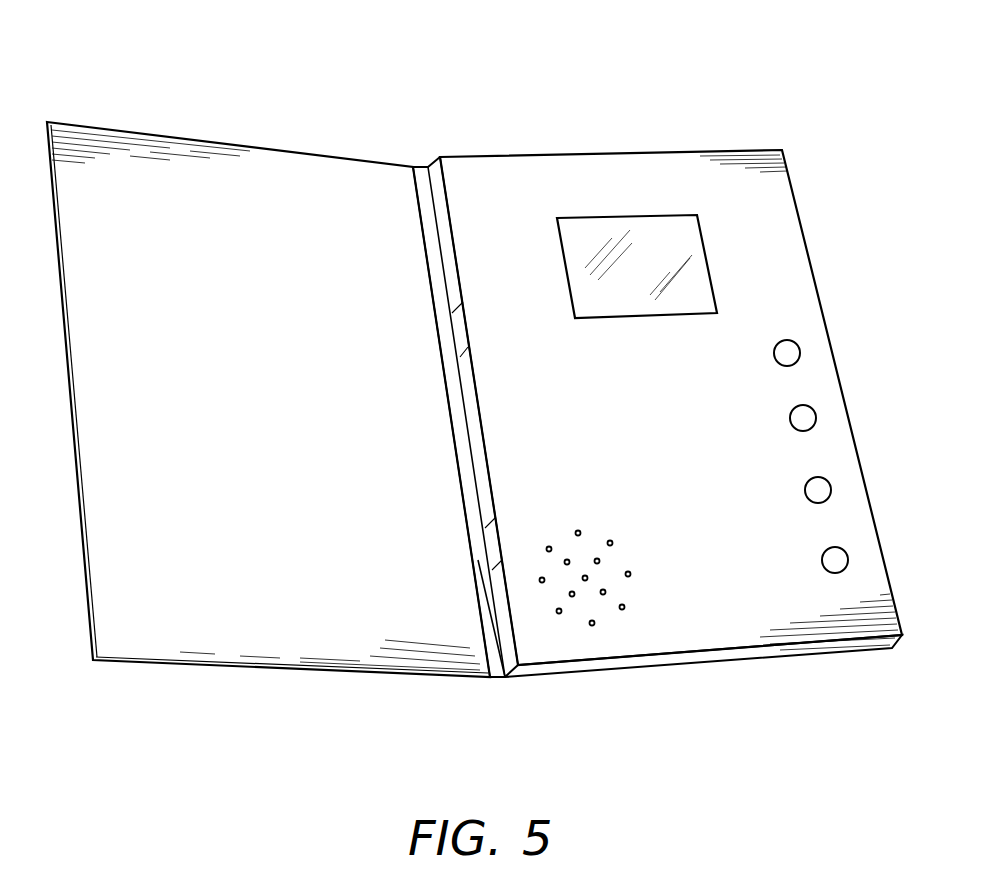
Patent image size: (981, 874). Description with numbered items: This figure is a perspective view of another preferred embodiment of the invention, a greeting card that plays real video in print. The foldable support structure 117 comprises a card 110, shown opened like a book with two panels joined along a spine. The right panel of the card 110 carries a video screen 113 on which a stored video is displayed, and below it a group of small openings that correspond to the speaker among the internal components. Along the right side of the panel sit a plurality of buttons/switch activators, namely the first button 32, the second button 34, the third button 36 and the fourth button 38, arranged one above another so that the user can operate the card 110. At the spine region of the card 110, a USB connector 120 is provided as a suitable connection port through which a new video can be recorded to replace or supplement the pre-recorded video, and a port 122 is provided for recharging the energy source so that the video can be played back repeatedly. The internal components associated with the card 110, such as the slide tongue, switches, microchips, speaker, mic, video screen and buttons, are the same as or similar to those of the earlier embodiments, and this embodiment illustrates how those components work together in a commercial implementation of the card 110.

The card 110 is at (474, 374).
The video screen 113 is at (683, 238).
The foldable support structure 117 is at (601, 163).
The USB connector 120 is at (460, 324).
The port 122 is at (497, 553).
The first button 32 is at (782, 354).
The second button 34 is at (798, 418).
The third button 36 is at (815, 490).
The fourth button 38 is at (830, 560).